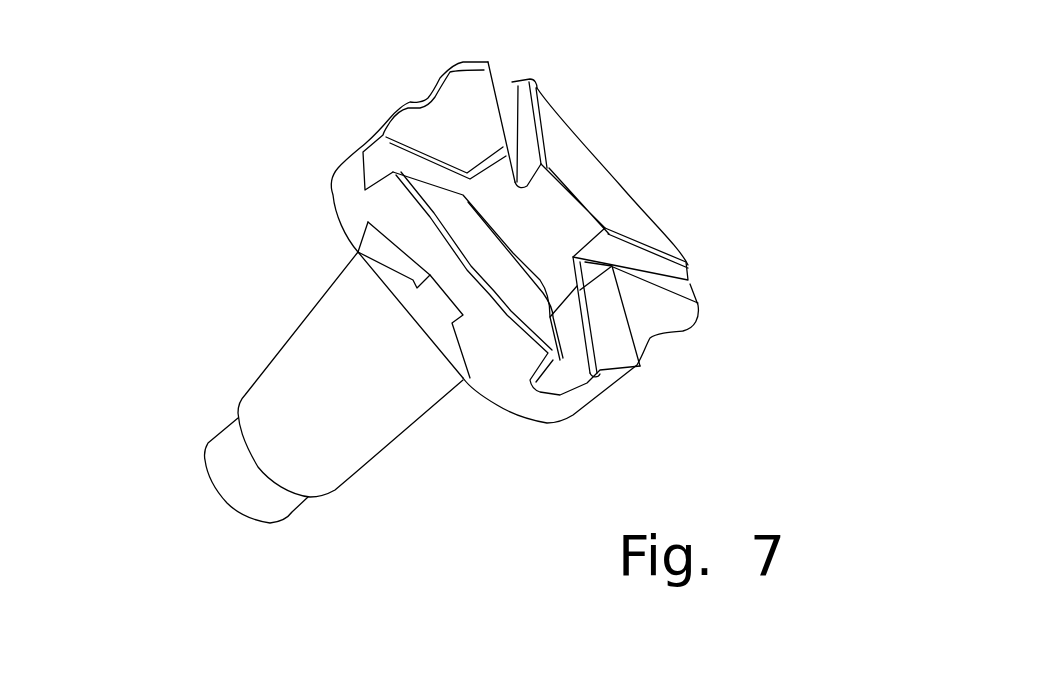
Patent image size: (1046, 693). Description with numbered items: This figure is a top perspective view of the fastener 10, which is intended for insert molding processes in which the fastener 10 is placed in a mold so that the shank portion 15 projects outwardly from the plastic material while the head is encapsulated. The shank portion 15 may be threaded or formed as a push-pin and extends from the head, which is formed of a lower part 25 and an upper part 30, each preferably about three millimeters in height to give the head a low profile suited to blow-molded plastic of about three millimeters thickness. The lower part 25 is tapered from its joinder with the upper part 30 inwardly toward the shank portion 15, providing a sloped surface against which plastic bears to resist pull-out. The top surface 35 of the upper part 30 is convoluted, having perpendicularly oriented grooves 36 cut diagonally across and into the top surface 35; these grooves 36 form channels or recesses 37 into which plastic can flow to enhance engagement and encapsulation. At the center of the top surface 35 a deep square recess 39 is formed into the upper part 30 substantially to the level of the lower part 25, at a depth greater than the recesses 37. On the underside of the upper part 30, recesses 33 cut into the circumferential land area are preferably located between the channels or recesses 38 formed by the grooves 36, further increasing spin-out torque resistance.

The fastener 10 is at (237, 237).
The shank portion 15 is at (332, 466).
The lower part 25 is at (461, 383).
The upper part 30 is at (677, 325).
The recesses 33 is at (418, 306).
The top surface 35 is at (582, 152).
The grooves 36 is at (383, 153).
The channels or recesses 37 is at (378, 170).
The channels or recesses 38 is at (488, 60).
The deep square recess 39 is at (552, 222).